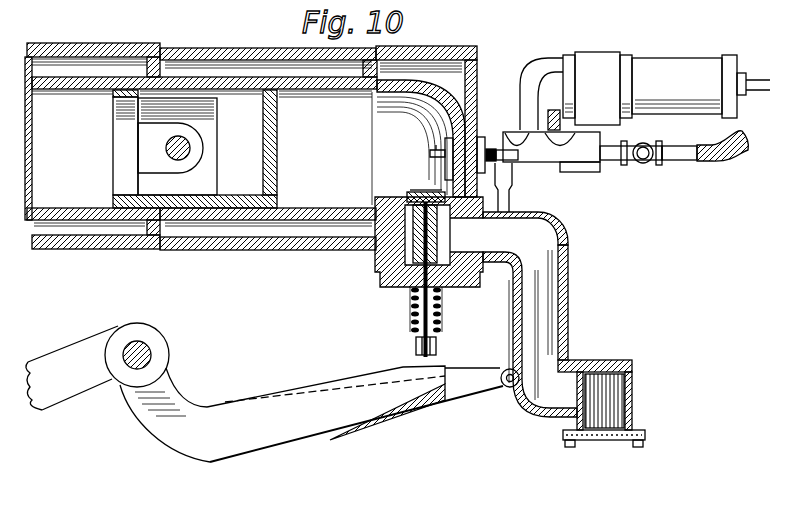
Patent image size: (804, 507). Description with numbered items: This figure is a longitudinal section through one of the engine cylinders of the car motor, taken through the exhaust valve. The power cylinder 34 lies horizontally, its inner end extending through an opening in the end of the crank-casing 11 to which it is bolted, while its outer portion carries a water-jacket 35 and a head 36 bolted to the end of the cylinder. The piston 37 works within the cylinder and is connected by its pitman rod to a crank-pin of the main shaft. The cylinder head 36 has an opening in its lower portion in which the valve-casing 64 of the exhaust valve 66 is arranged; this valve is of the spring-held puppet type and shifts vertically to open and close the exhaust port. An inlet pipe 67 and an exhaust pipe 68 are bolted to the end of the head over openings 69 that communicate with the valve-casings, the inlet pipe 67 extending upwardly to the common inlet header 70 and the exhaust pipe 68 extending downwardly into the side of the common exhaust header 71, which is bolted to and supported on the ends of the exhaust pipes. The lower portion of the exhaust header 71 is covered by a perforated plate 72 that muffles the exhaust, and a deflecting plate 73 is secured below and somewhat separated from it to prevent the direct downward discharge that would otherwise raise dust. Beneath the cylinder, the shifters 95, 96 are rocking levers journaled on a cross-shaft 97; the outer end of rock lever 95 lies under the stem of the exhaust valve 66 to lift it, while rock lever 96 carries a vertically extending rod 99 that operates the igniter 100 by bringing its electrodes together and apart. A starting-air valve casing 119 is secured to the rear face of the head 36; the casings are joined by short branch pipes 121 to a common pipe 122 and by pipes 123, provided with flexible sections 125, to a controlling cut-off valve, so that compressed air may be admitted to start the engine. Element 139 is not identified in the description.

The crank-casing 11 is at (119, 47).
The water-jacket 35 is at (214, 48).
The cylinder head 36 is at (457, 50).
The power cylinder 34 is at (323, 92).
The piston 37 is at (278, 152).
The exhaust valve 66 is at (408, 192).
The valve-casing 64 is at (392, 287).
The opening 69 is at (458, 288).
The valve casing 119 is at (548, 207).
The exhaust pipe 68 is at (569, 300).
The igniter operating rod 99 is at (512, 323).
The exhaust header 71 is at (626, 362).
The perforated plate 72 is at (606, 430).
The deflecting plate 73 is at (613, 440).
The cross-shaft 97 is at (148, 346).
The shifter (exhaust valve rock lever) 95 is at (273, 432).
The shifter (igniter rock lever) 96 is at (379, 412).
The inlet pipe 67 is at (530, 98).
The inlet header 70 is at (602, 66).
The cylinder 139 is at (701, 86).
The igniter 100 is at (493, 160).
The branch pipe 121 is at (619, 162).
The common pipe 122 is at (648, 165).
The pipe 123 is at (677, 148).
The flexible section 125 is at (724, 153).